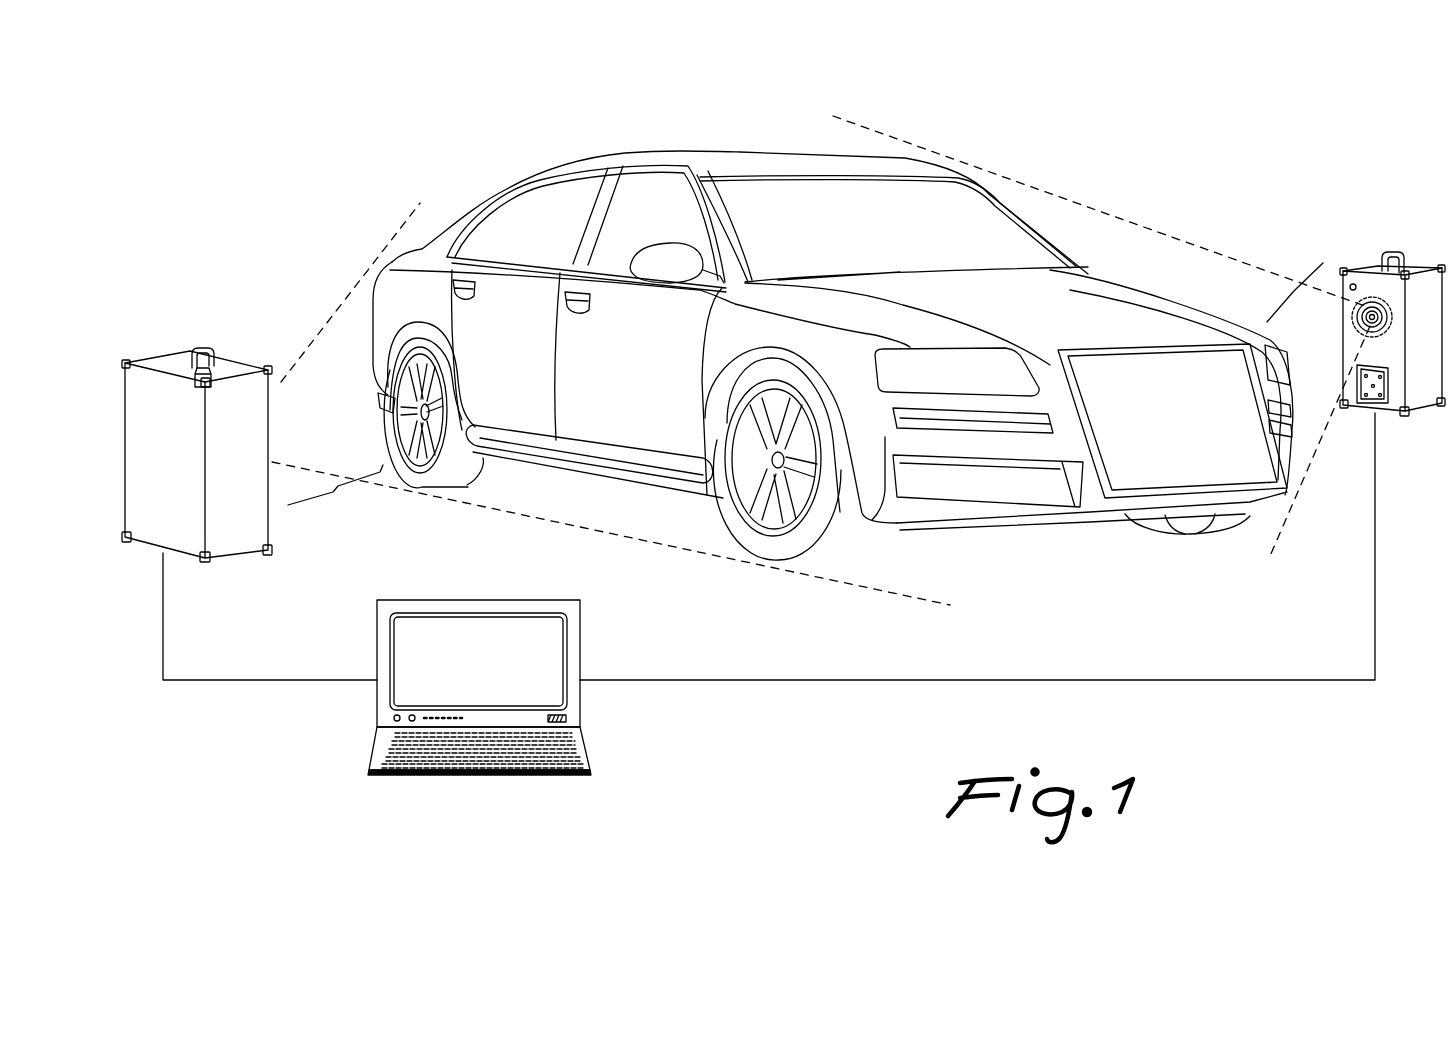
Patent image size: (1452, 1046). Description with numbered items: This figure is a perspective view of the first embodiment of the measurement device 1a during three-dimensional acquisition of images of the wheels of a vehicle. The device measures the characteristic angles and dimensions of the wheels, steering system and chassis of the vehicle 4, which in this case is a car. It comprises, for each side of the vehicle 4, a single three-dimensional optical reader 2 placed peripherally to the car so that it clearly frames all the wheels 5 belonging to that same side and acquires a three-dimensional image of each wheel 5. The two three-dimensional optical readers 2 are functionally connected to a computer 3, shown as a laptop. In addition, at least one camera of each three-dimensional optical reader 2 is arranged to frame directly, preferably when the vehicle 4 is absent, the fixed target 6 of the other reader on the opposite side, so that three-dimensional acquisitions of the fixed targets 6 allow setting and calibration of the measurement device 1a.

The measurement device 1a is at (221, 192).
The three-dimensional optical reader 2 is at (241, 358).
The computer 3 is at (466, 786).
The vehicle 4 is at (1067, 537).
The wheel 5 is at (480, 497).
The fixed target 6 is at (1350, 381).